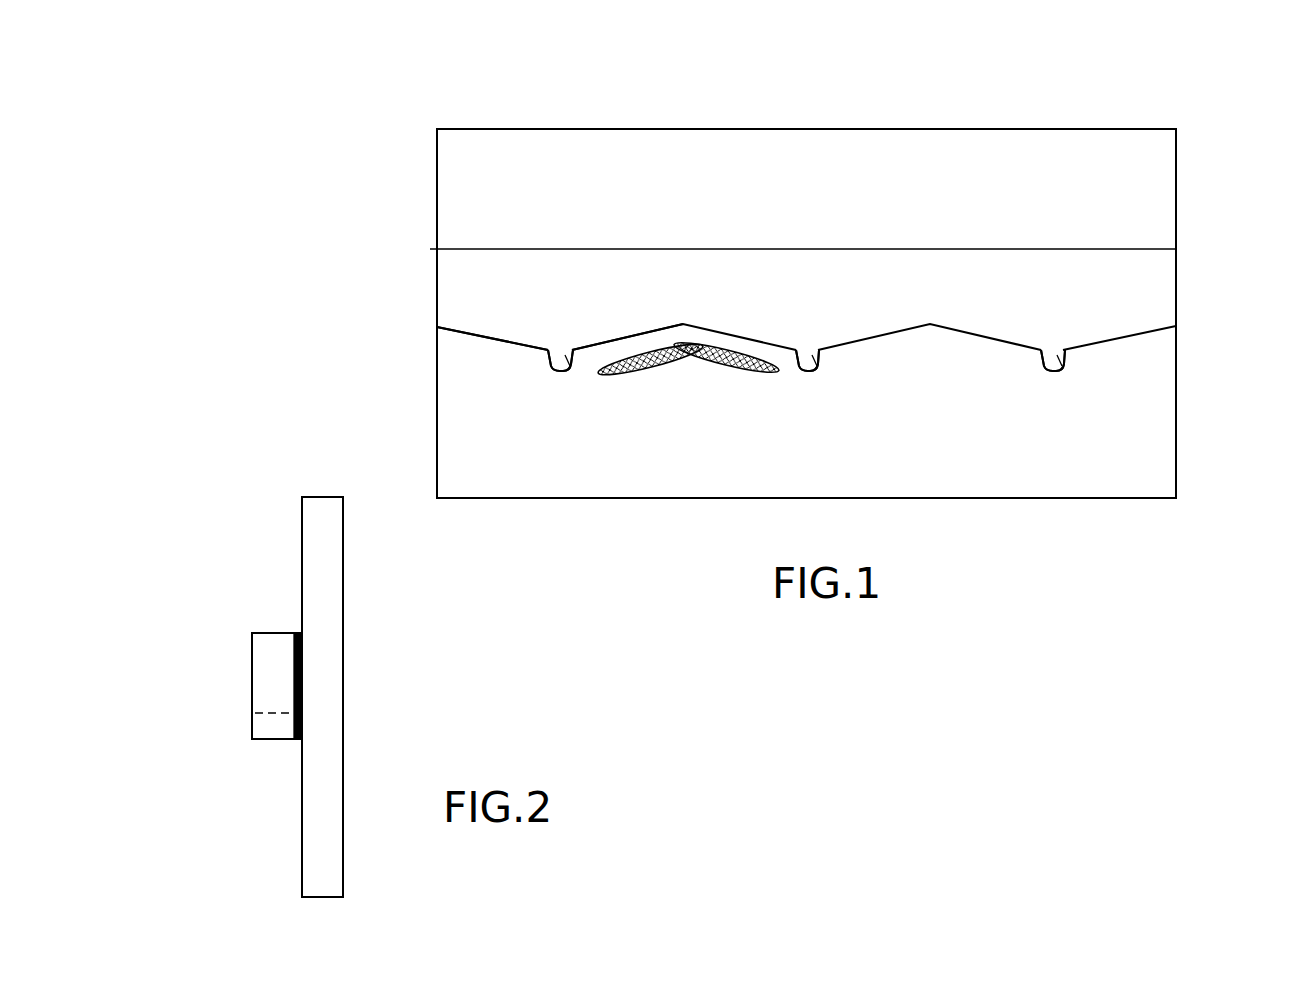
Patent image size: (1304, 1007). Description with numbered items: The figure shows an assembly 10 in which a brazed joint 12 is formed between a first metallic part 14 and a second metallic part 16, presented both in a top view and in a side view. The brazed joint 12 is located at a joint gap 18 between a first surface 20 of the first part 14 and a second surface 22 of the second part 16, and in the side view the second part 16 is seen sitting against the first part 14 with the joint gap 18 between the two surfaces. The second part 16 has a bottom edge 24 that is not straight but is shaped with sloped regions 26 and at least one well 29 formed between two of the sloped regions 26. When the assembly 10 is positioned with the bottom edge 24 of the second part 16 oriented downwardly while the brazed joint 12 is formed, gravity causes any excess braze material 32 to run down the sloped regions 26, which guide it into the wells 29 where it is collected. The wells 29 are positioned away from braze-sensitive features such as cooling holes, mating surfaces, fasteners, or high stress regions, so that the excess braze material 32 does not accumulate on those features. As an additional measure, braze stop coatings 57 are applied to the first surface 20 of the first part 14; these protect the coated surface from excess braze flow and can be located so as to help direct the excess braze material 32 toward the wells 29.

In FIG. 1, the assembly 10 is at (1207, 111).
In FIG. 2, the assembly 10 is at (254, 510).
In FIG. 2, the brazed joint 12 is at (298, 632).
In FIG. 1, the first metallic part 14 is at (1157, 197).
In FIG. 2, the first metallic part 14 is at (333, 548).
In FIG. 1, the second metallic part 16 is at (1157, 298).
In FIG. 2, the second metallic part 16 is at (254, 664).
In FIG. 2, the joint gap 18 is at (296, 750).
In FIG. 2, the first surface 20 is at (301, 842).
In FIG. 2, the second surface 22 is at (294, 698).
In FIG. 1, the bottom edge 24 is at (873, 338).
In FIG. 1, the sloped regions 26 is at (495, 338).
In FIG. 1, the well 29 is at (561, 348).
In FIG. 2, the well 29 is at (270, 740).
In FIG. 1, the excess braze material 32 is at (556, 367).
In FIG. 1, the braze stop coating 57 is at (640, 376).